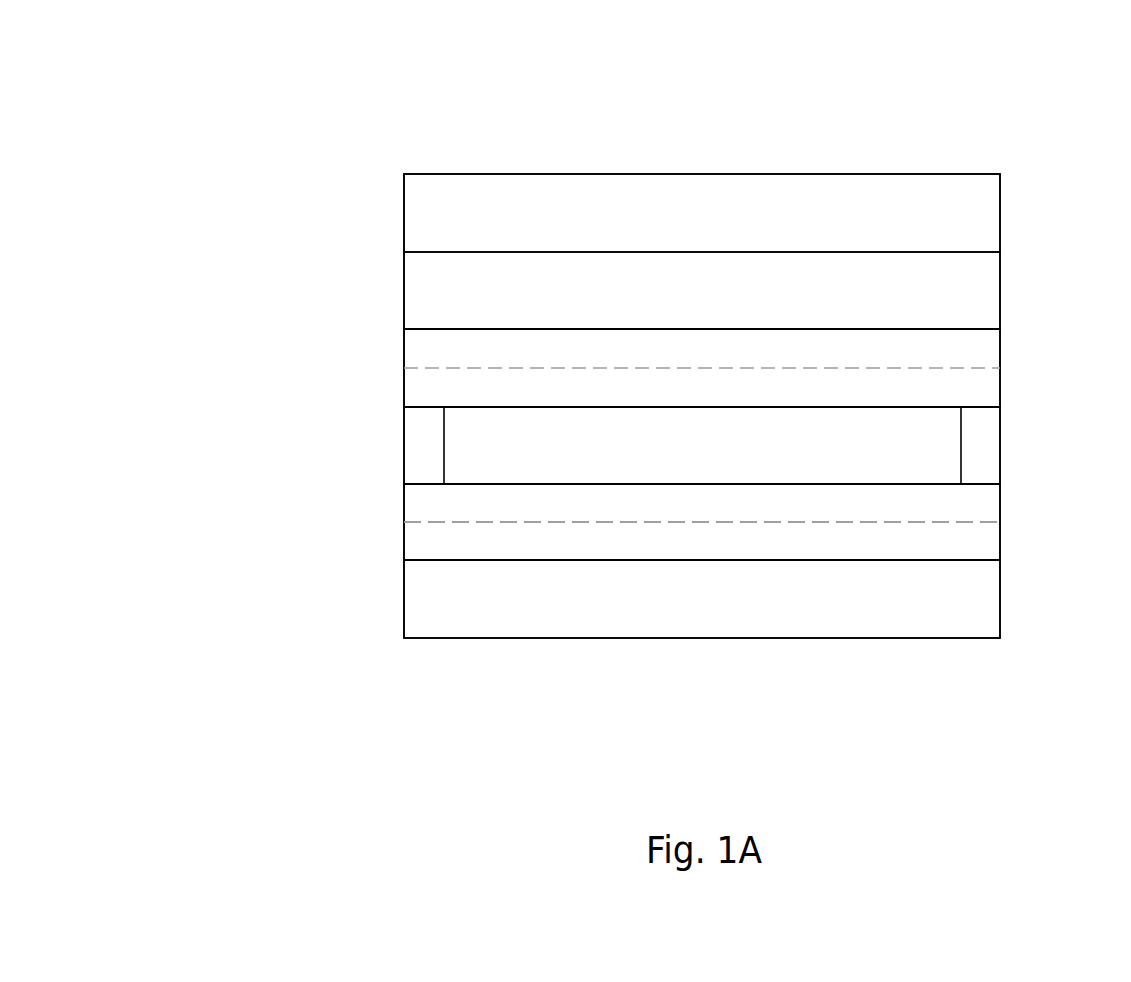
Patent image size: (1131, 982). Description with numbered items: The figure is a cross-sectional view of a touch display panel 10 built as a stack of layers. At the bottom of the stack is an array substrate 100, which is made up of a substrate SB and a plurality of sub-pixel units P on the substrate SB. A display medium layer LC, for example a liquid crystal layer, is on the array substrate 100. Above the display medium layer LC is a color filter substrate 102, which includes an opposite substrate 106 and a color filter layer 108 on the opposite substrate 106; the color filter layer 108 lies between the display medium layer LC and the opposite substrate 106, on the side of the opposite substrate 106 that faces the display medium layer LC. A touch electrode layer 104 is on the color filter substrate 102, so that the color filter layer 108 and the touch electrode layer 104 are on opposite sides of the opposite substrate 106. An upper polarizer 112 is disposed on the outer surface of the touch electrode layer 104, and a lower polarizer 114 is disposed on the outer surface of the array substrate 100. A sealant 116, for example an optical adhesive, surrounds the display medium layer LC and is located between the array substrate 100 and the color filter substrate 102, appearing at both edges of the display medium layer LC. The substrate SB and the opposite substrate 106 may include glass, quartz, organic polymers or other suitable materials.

The touch display panel 10 is at (212, 78).
The upper polarizer 112 is at (413, 213).
The touch electrode layer 104 is at (413, 288).
The color filter substrate 102 is at (297, 318).
The opposite substrate 106 is at (412, 347).
The color filter layer 108 is at (412, 388).
The display medium layer LC is at (949, 428).
The sealant 116 is at (412, 445).
The array substrate 100 is at (297, 500).
The sub-pixel units P is at (413, 502).
The substrate SB is at (413, 540).
The lower polarizer 114 is at (413, 600).